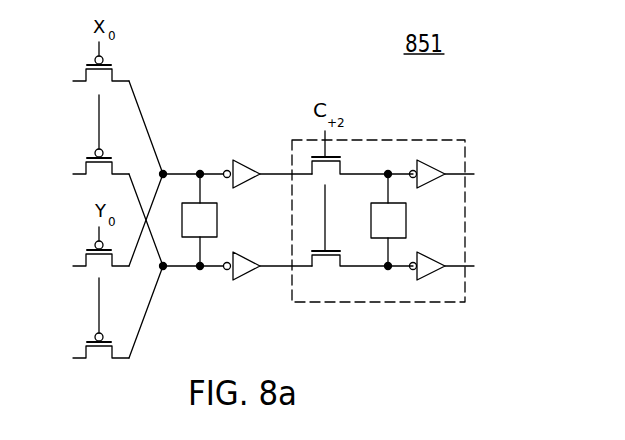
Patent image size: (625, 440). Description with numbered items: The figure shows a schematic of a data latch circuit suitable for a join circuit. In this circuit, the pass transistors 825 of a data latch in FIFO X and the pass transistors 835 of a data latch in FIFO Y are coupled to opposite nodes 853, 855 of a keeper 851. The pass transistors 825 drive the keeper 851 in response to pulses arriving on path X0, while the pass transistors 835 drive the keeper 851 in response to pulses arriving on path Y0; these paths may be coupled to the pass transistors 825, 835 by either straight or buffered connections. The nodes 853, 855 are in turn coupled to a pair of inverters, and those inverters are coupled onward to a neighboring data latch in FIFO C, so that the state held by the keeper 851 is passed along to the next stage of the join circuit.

The pass transistors 825 is at (74, 80).
The pass transistors 835 is at (74, 265).
The node 853 is at (200, 171).
The node 855 is at (200, 270).
The keeper 851 is at (217, 227).